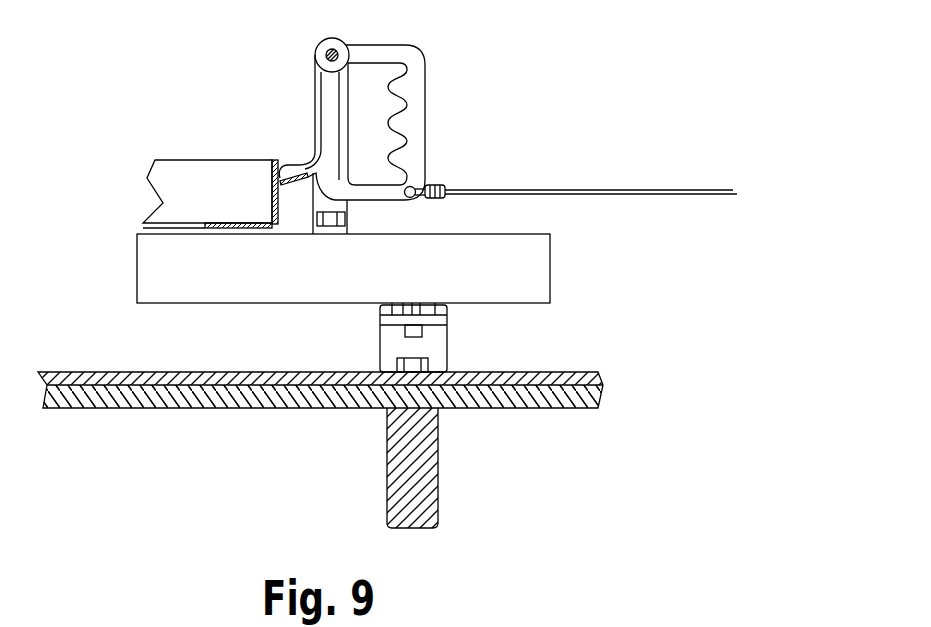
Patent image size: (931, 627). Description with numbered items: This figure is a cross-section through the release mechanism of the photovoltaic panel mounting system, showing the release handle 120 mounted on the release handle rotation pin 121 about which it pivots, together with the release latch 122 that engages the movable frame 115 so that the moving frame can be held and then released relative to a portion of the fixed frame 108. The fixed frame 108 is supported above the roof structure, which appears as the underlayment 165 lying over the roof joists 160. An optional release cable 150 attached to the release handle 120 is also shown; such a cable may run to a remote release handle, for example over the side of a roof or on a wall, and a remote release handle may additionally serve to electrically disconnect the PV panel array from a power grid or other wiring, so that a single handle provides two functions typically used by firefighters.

The fixed frame assembly 108 is at (448, 343).
The movable frame 115 is at (230, 170).
The release handle assembly 120 is at (412, 62).
The release handle rotation pin 121 is at (330, 47).
The release latch 122 is at (302, 186).
The roof edge release cable 150 is at (615, 193).
The roof joists 160 is at (428, 508).
The underlayment 165 is at (130, 408).